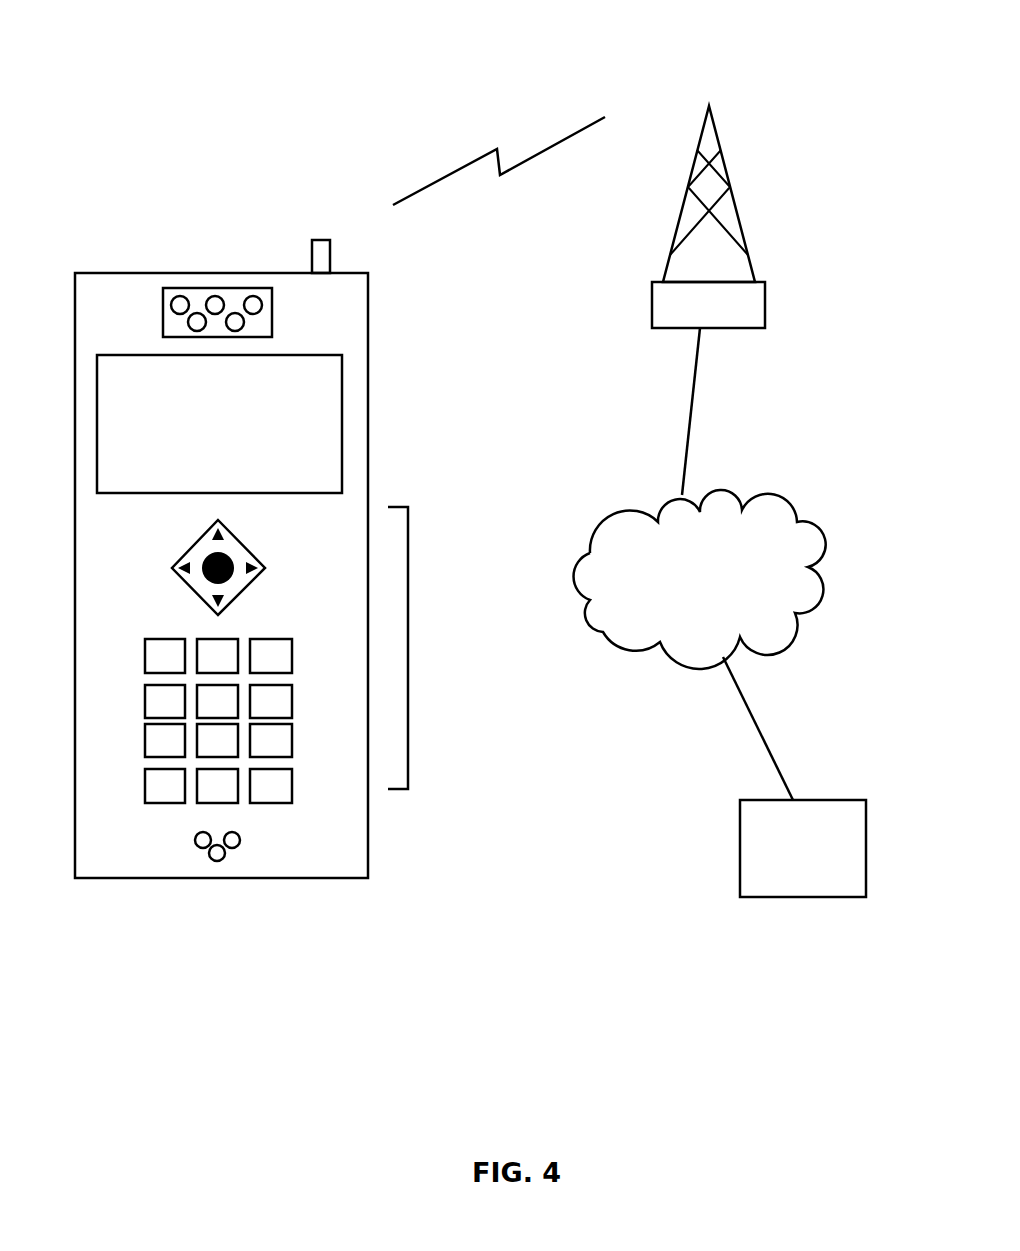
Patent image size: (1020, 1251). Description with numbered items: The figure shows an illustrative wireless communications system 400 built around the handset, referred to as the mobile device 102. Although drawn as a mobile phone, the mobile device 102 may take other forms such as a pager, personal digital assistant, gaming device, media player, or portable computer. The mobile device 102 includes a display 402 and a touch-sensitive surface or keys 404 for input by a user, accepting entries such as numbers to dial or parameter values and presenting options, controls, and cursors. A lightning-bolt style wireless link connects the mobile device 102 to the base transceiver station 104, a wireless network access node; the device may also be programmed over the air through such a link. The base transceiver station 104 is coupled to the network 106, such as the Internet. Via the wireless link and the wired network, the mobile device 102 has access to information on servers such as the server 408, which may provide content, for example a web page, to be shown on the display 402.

The wireless communications system 400 is at (385, 128).
The mobile device 102 is at (93, 275).
The display 402 is at (347, 412).
The keys 404 is at (408, 543).
The base transceiver station 104 is at (765, 293).
The network 106 is at (815, 522).
The server 408 is at (767, 897).